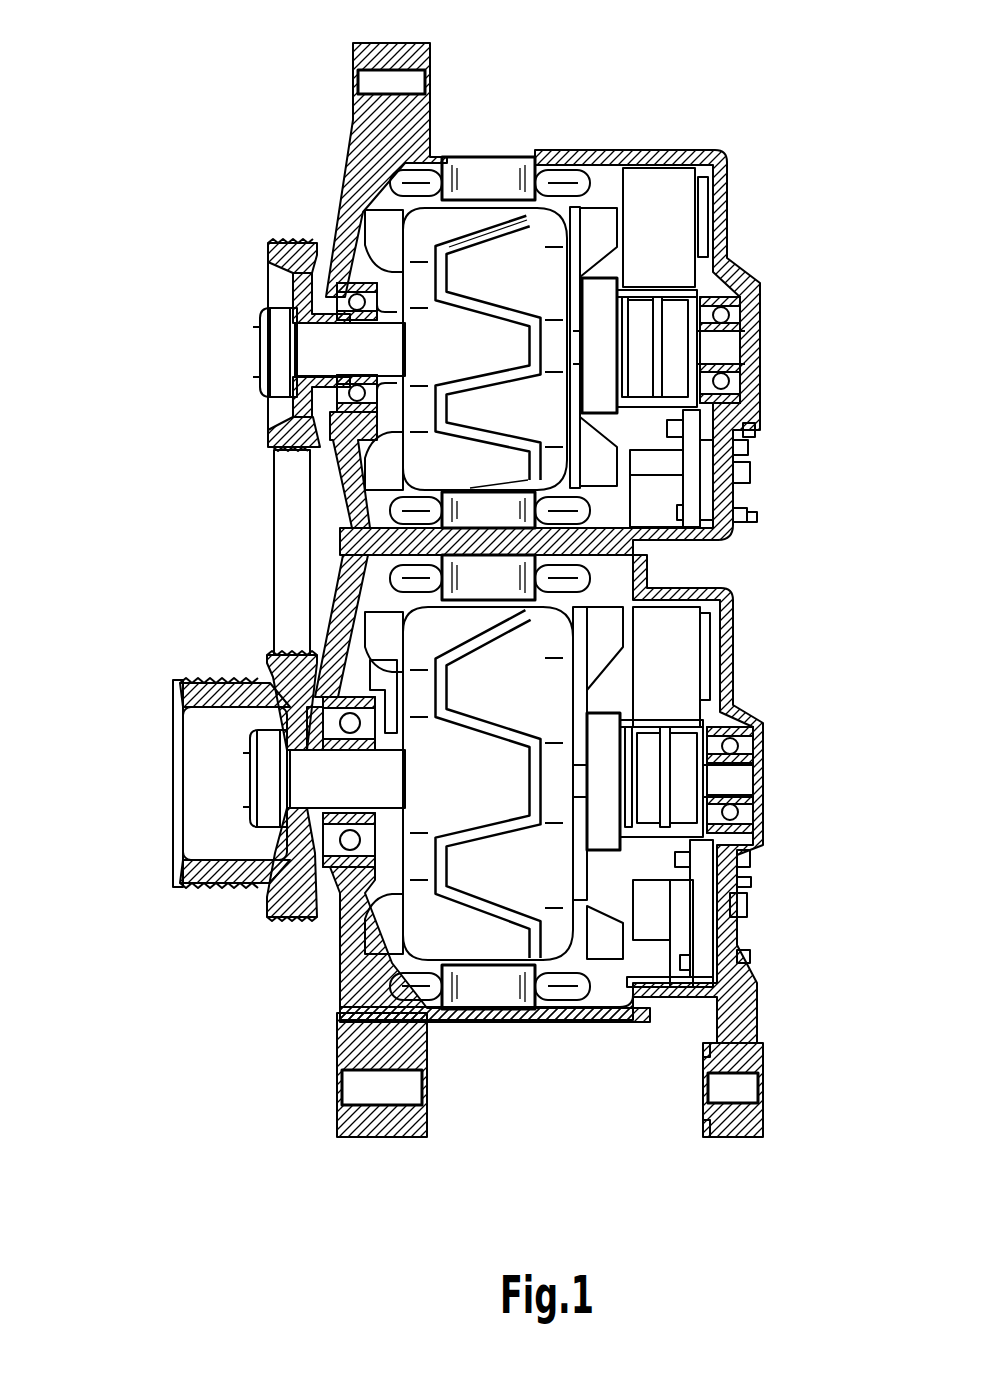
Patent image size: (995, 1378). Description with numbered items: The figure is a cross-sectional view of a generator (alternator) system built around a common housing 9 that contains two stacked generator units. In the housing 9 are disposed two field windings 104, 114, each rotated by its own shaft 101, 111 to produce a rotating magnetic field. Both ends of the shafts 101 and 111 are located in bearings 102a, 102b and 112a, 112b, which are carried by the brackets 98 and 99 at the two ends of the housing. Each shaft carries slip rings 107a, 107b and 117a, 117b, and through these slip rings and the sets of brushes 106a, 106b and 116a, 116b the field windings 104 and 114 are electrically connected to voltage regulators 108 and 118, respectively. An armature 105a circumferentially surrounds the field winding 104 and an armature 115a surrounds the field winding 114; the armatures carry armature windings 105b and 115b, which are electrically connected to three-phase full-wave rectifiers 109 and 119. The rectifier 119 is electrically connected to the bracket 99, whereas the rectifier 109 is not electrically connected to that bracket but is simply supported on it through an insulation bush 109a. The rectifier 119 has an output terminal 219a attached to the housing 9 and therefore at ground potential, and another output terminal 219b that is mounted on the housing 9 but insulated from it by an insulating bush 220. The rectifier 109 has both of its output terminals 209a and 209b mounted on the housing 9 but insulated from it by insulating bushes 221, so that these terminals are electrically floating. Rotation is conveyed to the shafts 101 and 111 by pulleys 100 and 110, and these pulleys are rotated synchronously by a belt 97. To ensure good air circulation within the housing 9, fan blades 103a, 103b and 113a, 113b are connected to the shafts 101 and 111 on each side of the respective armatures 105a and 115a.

The housing 9 is at (705, 152).
The belt 97 is at (283, 544).
The bracket 98 is at (390, 1140).
The bracket 99 is at (740, 1140).
The pulley 100 is at (270, 268).
The shaft 101 is at (303, 364).
The bearing 102a is at (352, 268).
The bearing 102b is at (705, 312).
The fan blade 103a is at (380, 215).
The fan blade 103b is at (594, 212).
The field winding 104 is at (548, 210).
The armature 105a is at (490, 170).
The armature winding 105b is at (558, 180).
The brush 106a is at (640, 295).
The brush 106b is at (655, 310).
The slip ring 107a is at (640, 352).
The slip ring 107b is at (680, 360).
The voltage regulator 108 is at (680, 200).
The three-phase full-wave rectifier 109 is at (700, 482).
The insulation bush 109a is at (744, 497).
The pulley 110 is at (178, 868).
The shaft 111 is at (300, 802).
The bearing 112a is at (316, 705).
The bearing 112b is at (712, 748).
The fan blade 113a is at (374, 927).
The fan blade 113b is at (603, 937).
The field winding 114 is at (417, 937).
The armature 115a is at (492, 1002).
The armature winding 115b is at (572, 990).
The brush 116a is at (652, 722).
The brush 116b is at (663, 742).
The slip ring 117a is at (645, 800).
The slip ring 117b is at (683, 795).
The voltage regulator 118 is at (690, 635).
The three-phase full-wave rectifier 119 is at (697, 912).
The output terminal 209a is at (759, 519).
The output terminal 209b is at (755, 430).
The output terminal 219a is at (752, 957).
The output terminal 219b is at (755, 858).
The insulating bush 220 is at (755, 882).
The insulating bush 221 is at (750, 448).